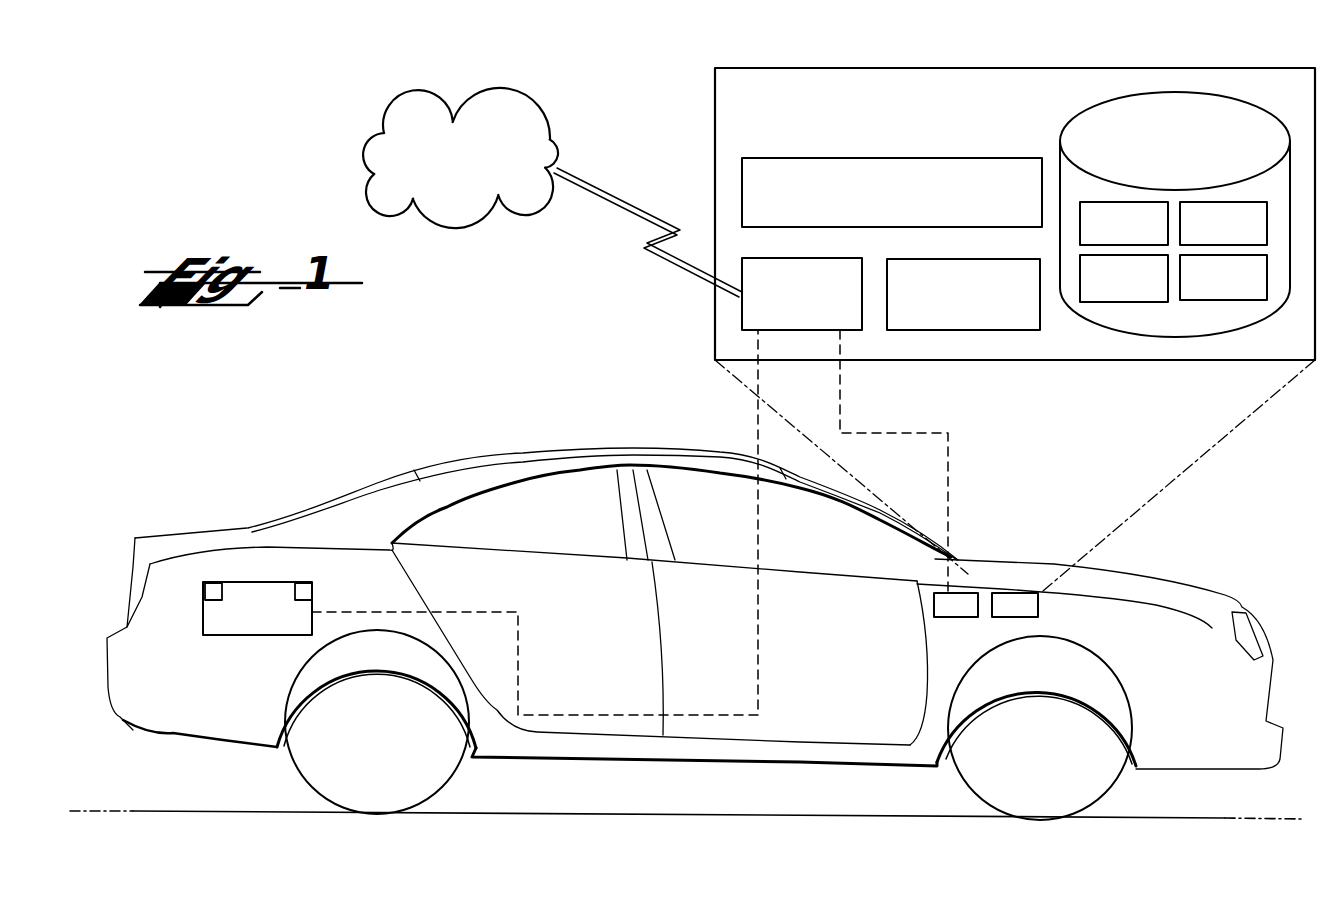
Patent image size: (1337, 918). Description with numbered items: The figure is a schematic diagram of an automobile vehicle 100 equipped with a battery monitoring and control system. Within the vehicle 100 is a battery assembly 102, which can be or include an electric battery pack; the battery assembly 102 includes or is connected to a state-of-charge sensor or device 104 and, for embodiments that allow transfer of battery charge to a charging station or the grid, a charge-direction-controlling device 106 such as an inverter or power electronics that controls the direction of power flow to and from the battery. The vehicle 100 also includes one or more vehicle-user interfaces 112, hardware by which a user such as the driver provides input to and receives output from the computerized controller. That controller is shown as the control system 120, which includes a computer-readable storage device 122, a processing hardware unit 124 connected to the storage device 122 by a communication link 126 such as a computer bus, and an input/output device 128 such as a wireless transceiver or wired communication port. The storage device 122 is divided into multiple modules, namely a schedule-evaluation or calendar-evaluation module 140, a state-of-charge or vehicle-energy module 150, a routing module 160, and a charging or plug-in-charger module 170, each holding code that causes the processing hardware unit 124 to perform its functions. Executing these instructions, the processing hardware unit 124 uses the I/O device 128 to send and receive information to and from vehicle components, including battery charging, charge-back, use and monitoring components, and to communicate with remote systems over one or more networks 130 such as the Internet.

The vehicle 100 is at (205, 459).
The battery assembly 102 is at (282, 623).
The state-of-charge sensor or device 104 is at (303, 583).
The charge-direction-controlling device 106 is at (215, 583).
The vehicle-user interface 112 is at (965, 574).
The control system 120 is at (910, 122).
The computer-readable storage device 122 is at (1203, 157).
The processing hardware unit 124 is at (985, 306).
The communication link 126 is at (910, 202).
The input/output (I/O) device 128 is at (818, 307).
The network 130 is at (483, 170).
The schedule-evaluation module 140 is at (1150, 238).
The state-of-charge or vehicle-energy module 150 is at (1248, 238).
The routing module 160 is at (1150, 292).
The charging or plug-in-charger module 170 is at (1247, 290).